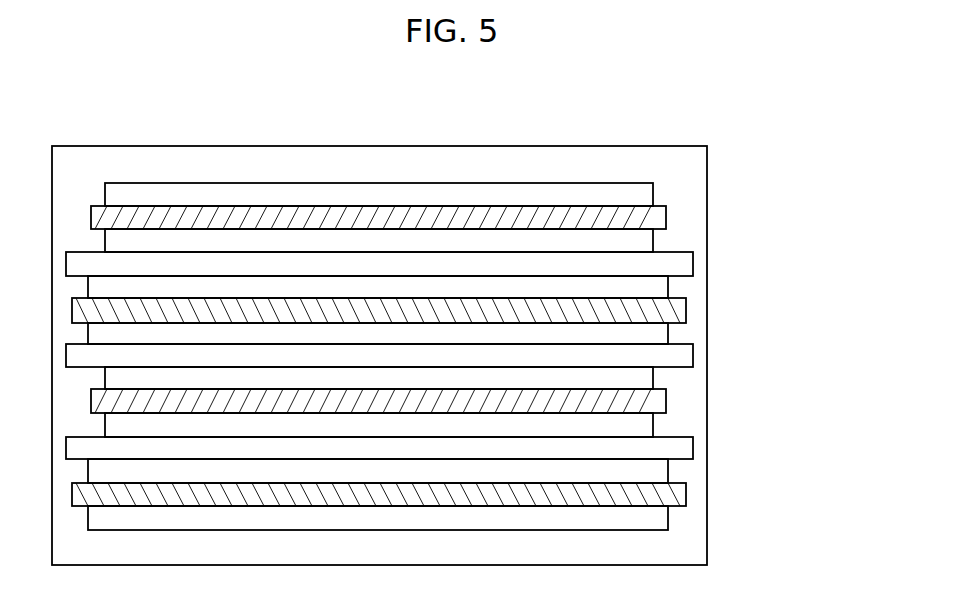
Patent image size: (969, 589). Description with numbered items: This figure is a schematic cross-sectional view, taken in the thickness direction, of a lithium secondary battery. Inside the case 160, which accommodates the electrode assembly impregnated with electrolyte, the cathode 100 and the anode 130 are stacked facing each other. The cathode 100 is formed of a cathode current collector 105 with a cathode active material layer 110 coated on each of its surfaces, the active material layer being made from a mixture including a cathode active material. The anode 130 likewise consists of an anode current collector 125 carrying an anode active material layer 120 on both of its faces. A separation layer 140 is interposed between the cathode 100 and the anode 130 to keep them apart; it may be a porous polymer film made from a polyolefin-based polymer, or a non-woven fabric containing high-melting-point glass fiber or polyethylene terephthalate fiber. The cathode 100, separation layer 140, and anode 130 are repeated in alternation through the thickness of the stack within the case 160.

The cathode 100 is at (471, 310).
The cathode current collector 105 is at (666, 217).
The cathode active material layer 110 is at (653, 193).
The anode active material layer 120 is at (668, 286).
The anode current collector 125 is at (686, 309).
The anode 130 is at (461, 402).
The separation layer 140 is at (573, 261).
The case 160 is at (708, 491).